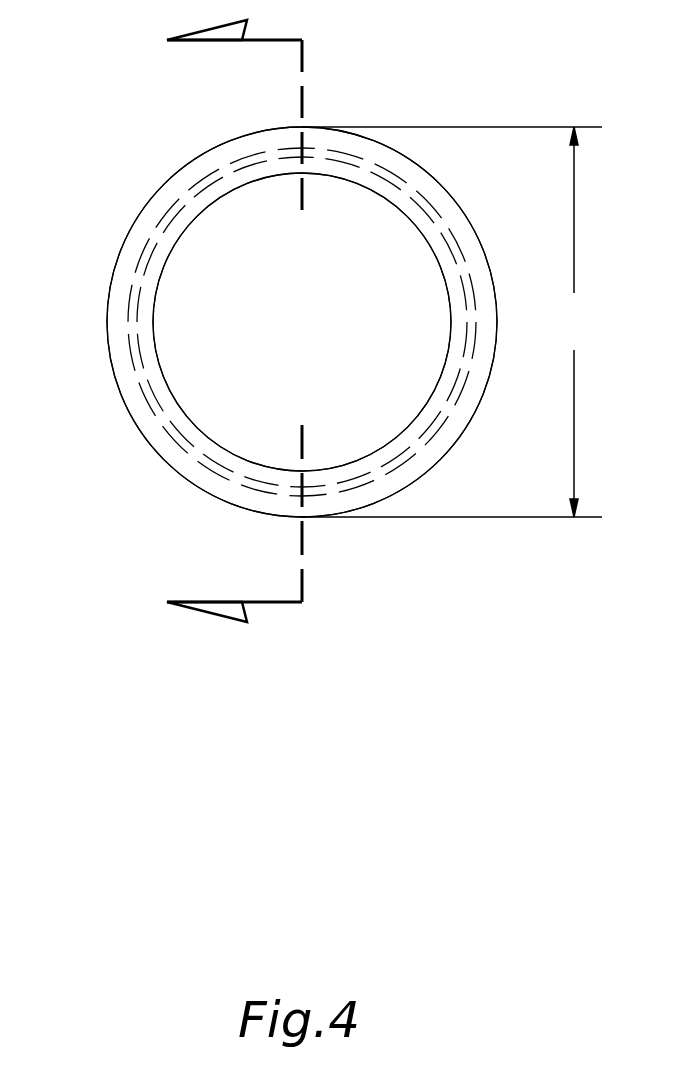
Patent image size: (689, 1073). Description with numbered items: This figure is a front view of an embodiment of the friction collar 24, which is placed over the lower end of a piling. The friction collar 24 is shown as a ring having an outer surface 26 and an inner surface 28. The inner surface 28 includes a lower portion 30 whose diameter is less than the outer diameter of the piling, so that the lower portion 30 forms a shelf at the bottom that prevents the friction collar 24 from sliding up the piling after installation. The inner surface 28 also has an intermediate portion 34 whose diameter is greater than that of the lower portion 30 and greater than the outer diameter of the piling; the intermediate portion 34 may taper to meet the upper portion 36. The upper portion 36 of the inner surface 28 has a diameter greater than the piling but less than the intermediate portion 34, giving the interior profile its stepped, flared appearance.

The friction collar 24 is at (117, 256).
The outer surface 26 is at (481, 241).
The inner surface 28 is at (409, 422).
The lower portion 30 is at (448, 350).
The intermediate portion 34 is at (160, 422).
The upper portion 36 is at (141, 358).